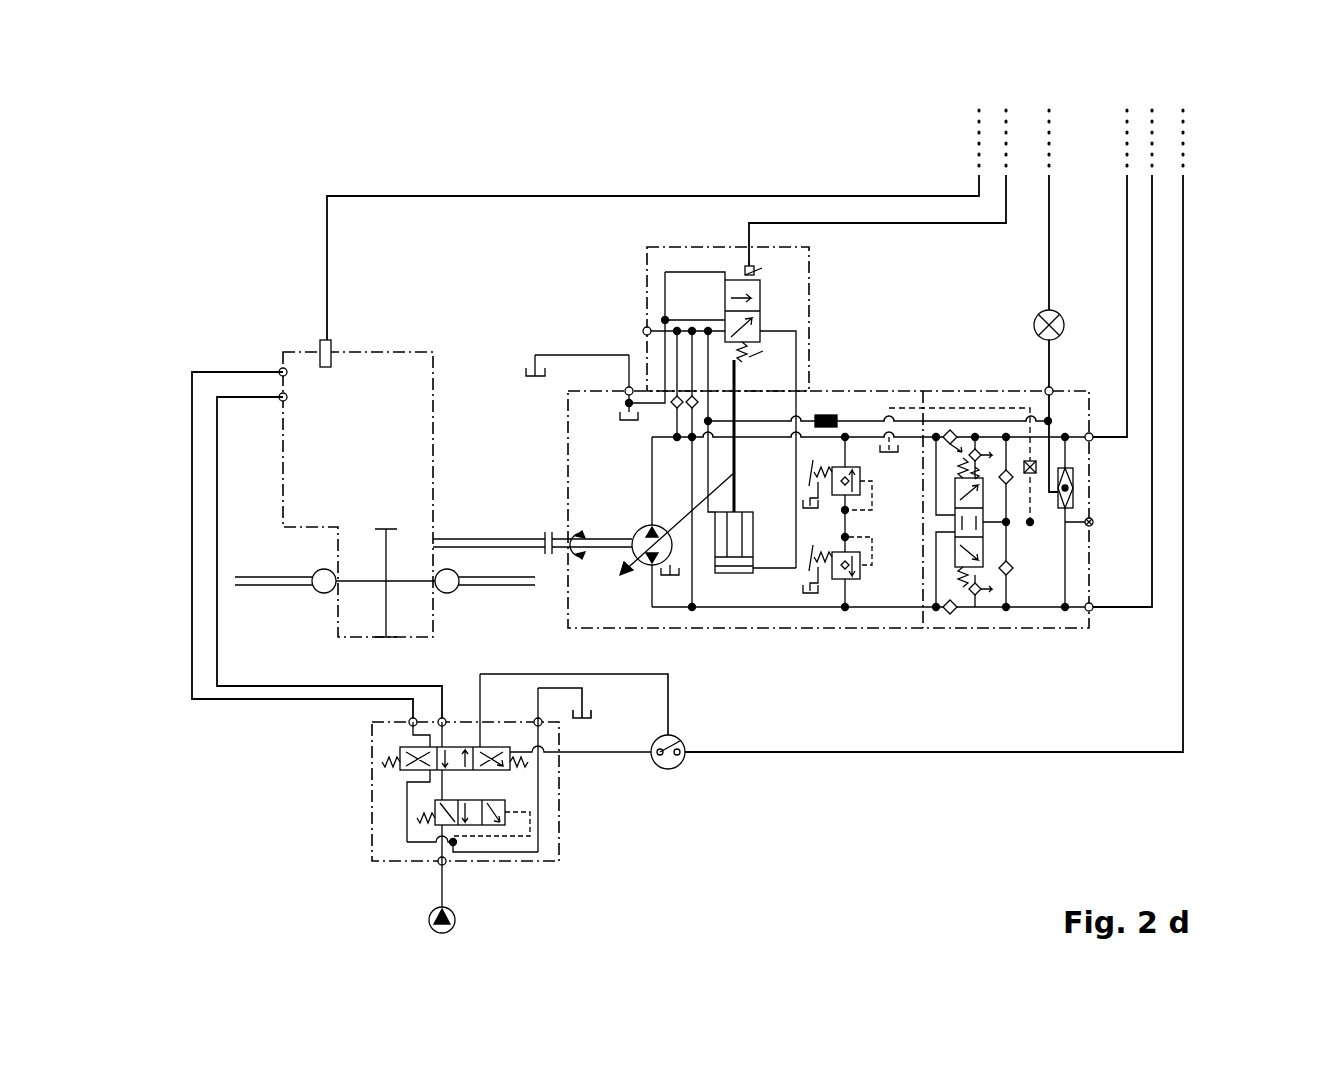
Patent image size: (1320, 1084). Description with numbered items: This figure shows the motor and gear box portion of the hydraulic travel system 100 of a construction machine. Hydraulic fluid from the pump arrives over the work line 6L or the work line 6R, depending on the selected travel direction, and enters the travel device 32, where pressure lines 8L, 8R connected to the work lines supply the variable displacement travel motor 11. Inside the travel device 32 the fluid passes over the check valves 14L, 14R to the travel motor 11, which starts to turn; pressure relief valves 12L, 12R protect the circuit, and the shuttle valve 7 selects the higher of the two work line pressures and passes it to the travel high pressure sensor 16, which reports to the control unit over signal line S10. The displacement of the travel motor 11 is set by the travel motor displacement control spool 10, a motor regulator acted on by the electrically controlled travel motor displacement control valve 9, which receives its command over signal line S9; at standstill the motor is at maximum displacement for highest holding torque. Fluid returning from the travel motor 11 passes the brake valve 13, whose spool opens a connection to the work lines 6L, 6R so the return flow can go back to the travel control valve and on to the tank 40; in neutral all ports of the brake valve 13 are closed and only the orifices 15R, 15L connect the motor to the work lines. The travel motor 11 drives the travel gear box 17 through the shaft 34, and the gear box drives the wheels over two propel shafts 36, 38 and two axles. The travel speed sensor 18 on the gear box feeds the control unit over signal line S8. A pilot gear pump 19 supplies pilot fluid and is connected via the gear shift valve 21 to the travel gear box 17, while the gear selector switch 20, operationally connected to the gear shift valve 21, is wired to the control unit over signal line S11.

The hydraulic travel system 100 is at (250, 200).
The shuttle valve 7 is at (1073, 488).
The travel motor displacement control valve 9 is at (812, 295).
The travel motor displacement control spool 10 is at (736, 578).
The variable displacement travel motor 11 is at (635, 527).
The pressure relief valve 12R is at (862, 471).
The pressure relief valve 12L is at (862, 580).
The brake valve 13 is at (998, 546).
The check valve 14R is at (949, 427).
The check valve 14L is at (945, 615).
The orifice 15R is at (983, 439).
The orifice 15L is at (975, 615).
The travel high pressure sensor 16 is at (1064, 321).
The travel gear box 17 is at (394, 352).
The travel speed sensor 18 is at (320, 341).
The pilot gear pump 19 is at (456, 919).
The gear selector switch 20 is at (668, 770).
The gear shift valve 21 is at (371, 795).
The travel device 32 is at (567, 489).
The shaft 34 is at (467, 537).
The propel shaft 36 is at (496, 590).
The propel shaft 38 is at (279, 590).
The tank 40 is at (530, 380).
The work line 6R is at (1127, 224).
The work line 6L is at (1152, 222).
The pressure line 8R is at (851, 419).
The pressure line 8L is at (780, 612).
The signal line S8 is at (656, 194).
The signal line S9 is at (861, 222).
The signal line S10 is at (1049, 270).
The signal line S11 is at (1183, 454).